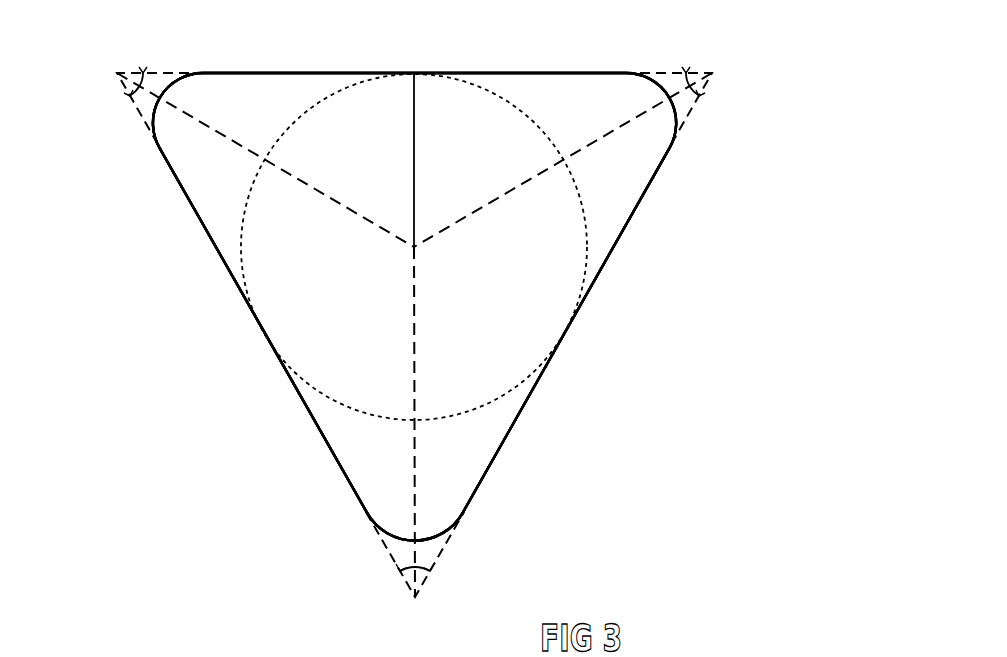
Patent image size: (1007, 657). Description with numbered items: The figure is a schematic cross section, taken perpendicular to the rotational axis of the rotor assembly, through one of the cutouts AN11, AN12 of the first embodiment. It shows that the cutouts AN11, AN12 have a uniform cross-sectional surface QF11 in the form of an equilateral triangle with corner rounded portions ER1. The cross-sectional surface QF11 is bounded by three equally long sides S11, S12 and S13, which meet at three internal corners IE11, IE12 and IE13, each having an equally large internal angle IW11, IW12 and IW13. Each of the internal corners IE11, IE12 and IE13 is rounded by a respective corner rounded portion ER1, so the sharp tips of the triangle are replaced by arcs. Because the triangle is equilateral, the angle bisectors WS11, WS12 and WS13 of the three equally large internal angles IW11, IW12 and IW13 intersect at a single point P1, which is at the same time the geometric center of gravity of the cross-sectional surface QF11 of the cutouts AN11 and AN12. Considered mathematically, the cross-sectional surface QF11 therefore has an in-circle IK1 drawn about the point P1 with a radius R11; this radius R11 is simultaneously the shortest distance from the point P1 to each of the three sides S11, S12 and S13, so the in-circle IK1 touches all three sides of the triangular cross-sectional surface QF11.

The cross-sectional surface QF11 is at (832, 286).
The cutout AN11 is at (492, 307).
The cutout AN12 is at (492, 307).
The side S11 is at (295, 73).
The side S12 is at (505, 442).
The side S13 is at (318, 432).
The corner rounded portion ER1 is at (655, 96).
The internal corner IE11 is at (714, 74).
The internal corner IE12 is at (412, 595).
The internal corner IE13 is at (115, 71).
The internal angle IW11 is at (697, 104).
The internal angle IW12 is at (440, 558).
The internal angle IW13 is at (125, 88).
The angle bisector WS11 is at (477, 212).
The angle bisector WS12 is at (418, 372).
The angle bisector WS13 is at (335, 203).
The radius R11 is at (413, 140).
The in-circle IK1 is at (515, 106).
The point P1 is at (410, 251).